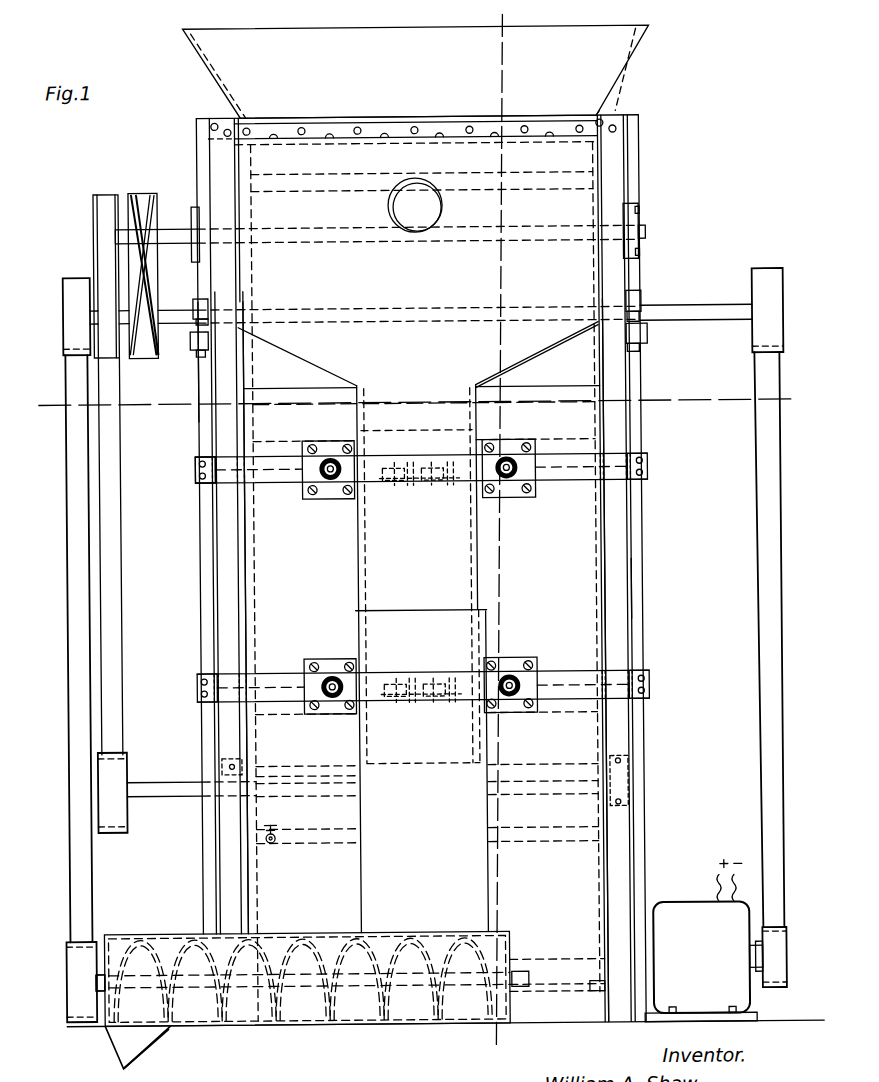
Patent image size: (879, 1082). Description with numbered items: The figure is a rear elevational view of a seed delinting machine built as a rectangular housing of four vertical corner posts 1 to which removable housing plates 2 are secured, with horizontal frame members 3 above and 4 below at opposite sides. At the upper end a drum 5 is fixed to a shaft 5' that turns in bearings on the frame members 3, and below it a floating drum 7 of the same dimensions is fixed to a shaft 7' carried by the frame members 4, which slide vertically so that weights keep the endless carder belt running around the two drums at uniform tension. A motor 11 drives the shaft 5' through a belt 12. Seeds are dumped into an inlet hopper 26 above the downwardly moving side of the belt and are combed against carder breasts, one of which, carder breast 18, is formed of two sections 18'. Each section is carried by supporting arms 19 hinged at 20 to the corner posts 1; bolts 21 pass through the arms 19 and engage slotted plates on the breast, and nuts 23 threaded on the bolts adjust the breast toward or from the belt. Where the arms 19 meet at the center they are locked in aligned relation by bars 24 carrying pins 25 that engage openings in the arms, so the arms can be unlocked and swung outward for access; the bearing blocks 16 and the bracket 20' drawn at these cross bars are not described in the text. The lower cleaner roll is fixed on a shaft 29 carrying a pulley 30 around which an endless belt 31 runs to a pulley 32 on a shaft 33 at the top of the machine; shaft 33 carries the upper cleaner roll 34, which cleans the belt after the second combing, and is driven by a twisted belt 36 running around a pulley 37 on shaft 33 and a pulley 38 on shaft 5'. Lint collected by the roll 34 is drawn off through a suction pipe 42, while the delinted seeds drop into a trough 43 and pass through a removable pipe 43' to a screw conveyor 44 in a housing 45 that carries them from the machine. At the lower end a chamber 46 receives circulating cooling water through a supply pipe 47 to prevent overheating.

The corner post 1 is at (612, 157).
The housing plate 2 is at (202, 420).
The upper horizontal frame member 3 is at (538, 22).
The lower horizontal frame member 4 is at (43, 381).
The drum 5 is at (705, 352).
The drum shaft 5' is at (352, 315).
The floating drum 7 is at (557, 970).
The floating drum shaft 7' is at (308, 830).
The motor 11 is at (678, 912).
The belt 12 is at (783, 898).
The bearing block 16 is at (325, 445).
The carder breast 18 is at (425, 508).
The carder breast section 18' is at (431, 662).
The supporting arm 19 is at (284, 473).
The hinge 20 is at (421, 578).
The clamp bracket 20' is at (183, 479).
The bolt 21 is at (334, 478).
The nut 23 is at (326, 478).
The locking bar 24 is at (437, 481).
The pin 25 is at (403, 455).
The inlet hopper 26 is at (416, 72).
The cleaner roll shaft 29 is at (170, 785).
The pulley 30 is at (127, 757).
The endless belt 31 is at (112, 464).
The pulley 32 is at (98, 195).
The shaft 33 is at (172, 228).
The cleaner roll 34 is at (619, 112).
The twisted belt 36 is at (142, 193).
The pulley 37 is at (146, 196).
The pulley 38 is at (151, 345).
The suction pipe 42 is at (445, 207).
The trough 43 is at (419, 356).
The pipe 43' is at (453, 658).
The screw conveyor 44 is at (262, 1023).
The conveyor housing 45 is at (168, 915).
The chamber 46 is at (66, 948).
The supply pipe 47 is at (264, 838).